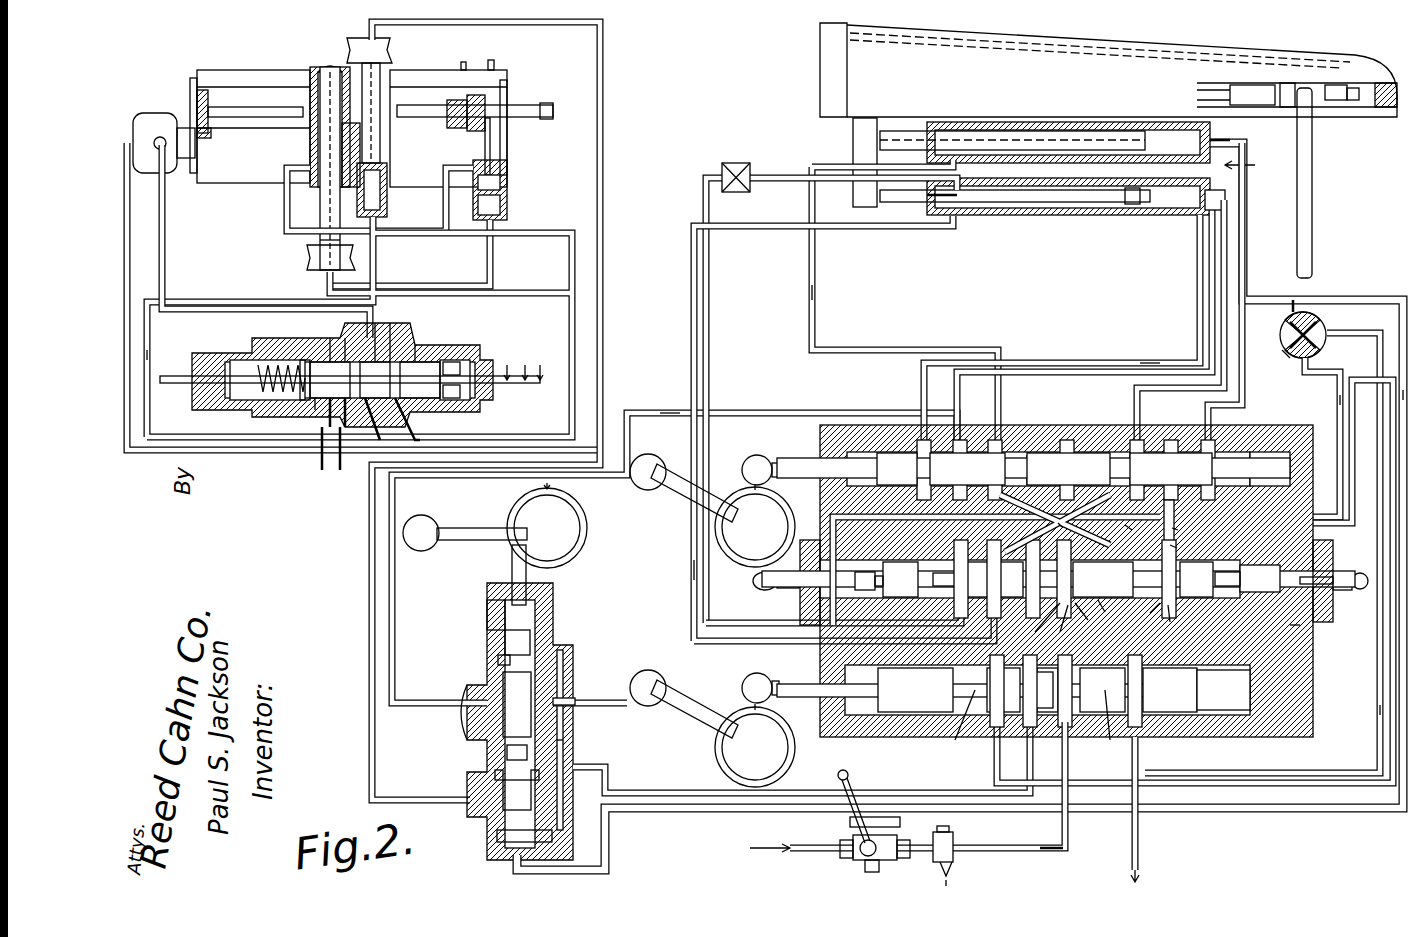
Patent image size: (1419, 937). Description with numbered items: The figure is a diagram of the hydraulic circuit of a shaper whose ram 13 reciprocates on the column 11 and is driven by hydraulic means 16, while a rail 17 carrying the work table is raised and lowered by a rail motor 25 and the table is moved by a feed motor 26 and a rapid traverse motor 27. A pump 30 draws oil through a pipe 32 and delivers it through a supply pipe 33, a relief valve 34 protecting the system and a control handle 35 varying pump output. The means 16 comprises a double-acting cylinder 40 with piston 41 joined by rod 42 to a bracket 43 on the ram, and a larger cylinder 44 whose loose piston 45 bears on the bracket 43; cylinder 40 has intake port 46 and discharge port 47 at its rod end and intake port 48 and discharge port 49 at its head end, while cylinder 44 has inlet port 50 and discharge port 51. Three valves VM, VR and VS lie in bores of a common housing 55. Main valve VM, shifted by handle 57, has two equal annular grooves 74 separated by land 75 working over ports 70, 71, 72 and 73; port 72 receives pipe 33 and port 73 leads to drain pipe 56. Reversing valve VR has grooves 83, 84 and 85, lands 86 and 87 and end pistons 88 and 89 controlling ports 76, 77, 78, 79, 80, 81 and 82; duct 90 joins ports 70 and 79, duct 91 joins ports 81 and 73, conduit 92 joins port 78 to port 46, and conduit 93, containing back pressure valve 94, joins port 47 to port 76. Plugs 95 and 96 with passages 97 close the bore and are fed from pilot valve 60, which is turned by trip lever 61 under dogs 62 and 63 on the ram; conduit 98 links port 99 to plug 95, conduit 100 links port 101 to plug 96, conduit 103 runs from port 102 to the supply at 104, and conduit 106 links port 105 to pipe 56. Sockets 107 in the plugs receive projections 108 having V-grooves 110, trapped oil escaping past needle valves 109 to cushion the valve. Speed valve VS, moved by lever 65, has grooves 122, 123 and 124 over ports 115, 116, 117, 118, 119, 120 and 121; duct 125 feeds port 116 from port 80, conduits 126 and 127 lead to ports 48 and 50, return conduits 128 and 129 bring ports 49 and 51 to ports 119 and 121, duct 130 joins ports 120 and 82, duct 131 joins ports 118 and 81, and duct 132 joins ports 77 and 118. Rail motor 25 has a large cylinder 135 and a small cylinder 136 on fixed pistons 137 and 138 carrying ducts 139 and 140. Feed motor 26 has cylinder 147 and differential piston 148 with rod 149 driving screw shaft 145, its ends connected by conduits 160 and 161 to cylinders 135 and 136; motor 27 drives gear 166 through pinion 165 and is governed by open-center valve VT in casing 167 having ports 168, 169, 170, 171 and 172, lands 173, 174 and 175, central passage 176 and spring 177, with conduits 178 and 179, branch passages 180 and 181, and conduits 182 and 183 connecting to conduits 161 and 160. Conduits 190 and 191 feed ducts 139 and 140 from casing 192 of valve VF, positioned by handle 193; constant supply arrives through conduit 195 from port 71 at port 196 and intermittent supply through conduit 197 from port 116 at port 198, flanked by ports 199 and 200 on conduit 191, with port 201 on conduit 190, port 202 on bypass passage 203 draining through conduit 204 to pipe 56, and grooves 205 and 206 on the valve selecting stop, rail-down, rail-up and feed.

The column 11 is at (386, 50).
The ram 13 is at (1008, 79).
The hydraulic means 16 is at (1257, 165).
The rail 17 is at (240, 183).
The hydraulic motor 25 is at (326, 54).
The hydraulic motor 26 is at (516, 196).
The hydraulic motor 27 is at (160, 112).
The pump 30 is at (897, 840).
The pipe 32 is at (815, 846).
The pipe 33 is at (1043, 846).
The relief valve 34 is at (955, 840).
The control handle 35 is at (850, 776).
The cylinder 40 is at (1083, 215).
The piston 41 is at (1130, 204).
The rod 42 is at (925, 200).
The bracket 43 is at (853, 148).
The cylinder 44 is at (1155, 122).
The piston 45 is at (1082, 131).
The intake port 46 is at (958, 226).
The port 47 is at (962, 180).
The intake port 48 is at (1198, 222).
The discharge port 49 is at (1222, 200).
The inlet port 50 is at (960, 160).
The discharge port 51 is at (1225, 143).
The housing 55 is at (1300, 630).
The pipe 56 is at (1140, 826).
The operating handle 57 is at (690, 705).
The pilot valve 60 is at (1315, 315).
The trip lever 61 is at (1312, 192).
The dog 62 is at (1265, 85).
The dog 63 is at (1345, 85).
The operating lever 65 is at (690, 487).
The annular port 70 is at (1000, 727).
The annular port 71 is at (1033, 727).
The annular port 72 is at (1068, 727).
The annular port 73 is at (1140, 727).
The annular grooves 74 is at (1034, 726).
The land 75 is at (1046, 689).
The annular port 76 is at (961, 558).
The annular port 77 is at (994, 558).
The annular port 78 is at (1044, 627).
The annular port 79 is at (1089, 621).
The annular port 80 is at (1110, 616).
The annular port 81 is at (1157, 617).
The annular port 82 is at (1177, 548).
The annular groove 83 is at (942, 578).
The annular groove 84 is at (1048, 562).
The annular groove 85 is at (1166, 560).
The land 86 is at (993, 579).
The land 87 is at (1103, 579).
The land 88 is at (1058, 579).
The land 89 is at (1196, 579).
The duct 90 is at (1064, 628).
The duct 91 is at (1177, 623).
The conduit 92 is at (690, 572).
The conduit 93 is at (712, 365).
The back pressure valve 94 is at (738, 162).
The plug 95 is at (1333, 545).
The plug 96 is at (800, 605).
The passage 97 is at (865, 570).
The conduit 98 is at (1400, 395).
The port 99 is at (1322, 352).
The conduit 100 is at (1337, 400).
The port 101 is at (1287, 356).
The port 102 is at (1292, 304).
The conduit 103 is at (1392, 733).
The connection 104 is at (1070, 792).
The port 105 is at (1330, 332).
The conduit 106 is at (1378, 710).
The sockets 107 is at (1260, 578).
The projections 108 is at (1225, 598).
The needle valve 109 is at (770, 592).
The V-grooves 110 is at (880, 570).
The annular port 115 is at (920, 440).
The annular port 116 is at (962, 440).
The annular port 117 is at (998, 440).
The annular port 118 is at (1067, 440).
The annular port 119 is at (1138, 440).
The annular port 120 is at (1170, 440).
The annular port 121 is at (1215, 445).
The annular groove 122 is at (968, 450).
The annular groove 123 is at (1030, 455).
The annular groove 124 is at (1180, 450).
The duct 125 is at (1060, 525).
The conduit 126 is at (1148, 362).
The conduit 127 is at (818, 292).
The return conduit 128 is at (1228, 262).
The return conduit 129 is at (1246, 235).
The duct 130 is at (1178, 530).
The duct 131 is at (1132, 528).
The duct 132 is at (1058, 512).
The cylinder 135 is at (312, 70).
The cylinder 136 is at (382, 182).
The piston 137 is at (320, 218).
The piston 138 is at (380, 72).
The duct 139 is at (318, 247).
The duct 140 is at (392, 87).
The screw shaft 145 is at (240, 107).
The cylinder 147 is at (500, 207).
The piston 148 is at (500, 182).
The rod 149 is at (487, 115).
The conduit 160 is at (420, 231).
The conduit 161 is at (475, 290).
The pinion 165 is at (205, 138).
The gear 166 is at (201, 90).
The casing 167 is at (295, 412).
The annular port 168 is at (352, 345).
The annular port 169 is at (380, 345).
The annular port 170 is at (392, 350).
The annular port 171 is at (318, 410).
The annular port 172 is at (485, 350).
The land 173 is at (340, 470).
The land 174 is at (320, 470).
The land 175 is at (420, 440).
The central passage 176 is at (380, 440).
The spring 177 is at (250, 410).
The conduit 178 is at (128, 225).
The conduit 179 is at (165, 260).
The branch passage 180 is at (330, 340).
The branch passage 181 is at (425, 350).
The conduit 182 is at (140, 350).
The conduit 183 is at (570, 262).
The conduit 190 is at (370, 594).
The conduit 191 is at (394, 575).
The casing 192 is at (487, 618).
The control handle 193 is at (492, 527).
The conduit 195 is at (670, 790).
The annular port 196 is at (495, 775).
The conduit 197 is at (672, 412).
The annular port 198 is at (565, 700).
The port 199 is at (467, 720).
The port 200 is at (503, 690).
The annular port 201 is at (492, 822).
The annular port 202 is at (505, 650).
The bypass passage 203 is at (563, 740).
The conduit 204 is at (640, 815).
The annular groove 205 is at (498, 660).
The annular groove 206 is at (507, 752).
The valve VT is at (455, 343).
The valve VF is at (553, 587).
The valve VS is at (1120, 450).
The valve VR is at (1030, 549).
The valve VM is at (1240, 672).